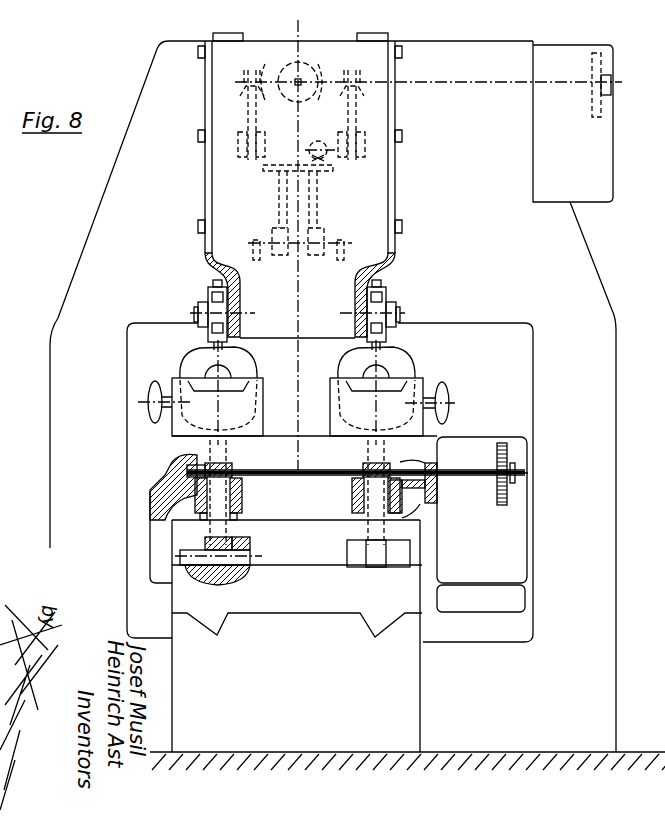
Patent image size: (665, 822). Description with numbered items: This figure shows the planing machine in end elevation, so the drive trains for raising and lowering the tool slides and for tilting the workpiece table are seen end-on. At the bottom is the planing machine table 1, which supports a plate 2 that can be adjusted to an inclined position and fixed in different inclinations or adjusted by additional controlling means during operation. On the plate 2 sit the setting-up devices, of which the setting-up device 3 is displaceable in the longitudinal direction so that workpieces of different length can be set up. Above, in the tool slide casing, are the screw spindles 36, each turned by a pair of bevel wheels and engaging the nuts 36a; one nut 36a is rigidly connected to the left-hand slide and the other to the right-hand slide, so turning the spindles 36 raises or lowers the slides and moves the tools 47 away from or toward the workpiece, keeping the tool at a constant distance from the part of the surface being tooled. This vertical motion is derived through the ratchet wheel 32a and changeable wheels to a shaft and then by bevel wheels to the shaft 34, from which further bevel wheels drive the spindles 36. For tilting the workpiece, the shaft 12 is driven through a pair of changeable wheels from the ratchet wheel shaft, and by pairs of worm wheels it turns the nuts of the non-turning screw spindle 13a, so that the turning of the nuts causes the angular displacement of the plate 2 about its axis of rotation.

The planing machine table 1 is at (304, 602).
The plate 2 is at (304, 504).
The setting-up device 3 is at (242, 413).
The shaft 12 is at (300, 468).
The non-turning screw spindle 13a is at (292, 512).
The ratchet wheel 32a is at (660, 69).
The shaft 34 is at (298, 80).
The screw spindle 36 is at (250, 120).
The nut 36a is at (247, 179).
The tool 47 is at (208, 291).